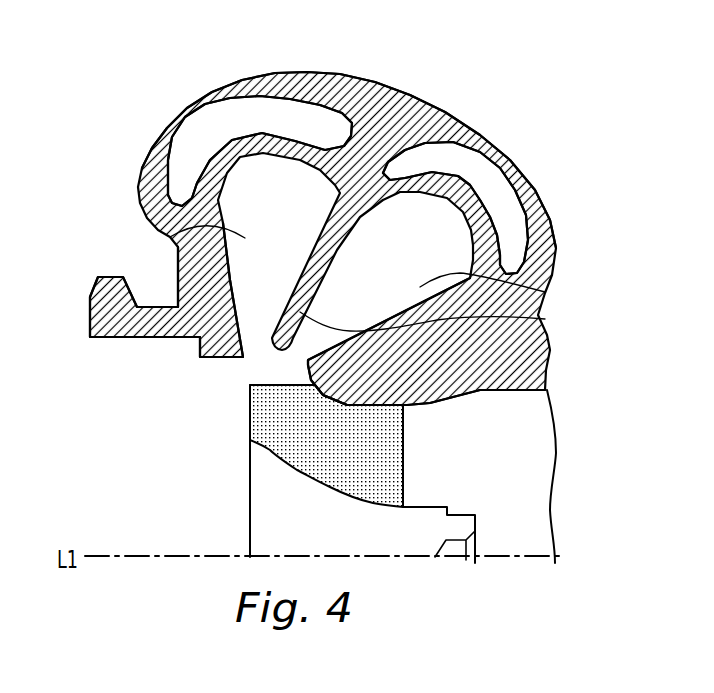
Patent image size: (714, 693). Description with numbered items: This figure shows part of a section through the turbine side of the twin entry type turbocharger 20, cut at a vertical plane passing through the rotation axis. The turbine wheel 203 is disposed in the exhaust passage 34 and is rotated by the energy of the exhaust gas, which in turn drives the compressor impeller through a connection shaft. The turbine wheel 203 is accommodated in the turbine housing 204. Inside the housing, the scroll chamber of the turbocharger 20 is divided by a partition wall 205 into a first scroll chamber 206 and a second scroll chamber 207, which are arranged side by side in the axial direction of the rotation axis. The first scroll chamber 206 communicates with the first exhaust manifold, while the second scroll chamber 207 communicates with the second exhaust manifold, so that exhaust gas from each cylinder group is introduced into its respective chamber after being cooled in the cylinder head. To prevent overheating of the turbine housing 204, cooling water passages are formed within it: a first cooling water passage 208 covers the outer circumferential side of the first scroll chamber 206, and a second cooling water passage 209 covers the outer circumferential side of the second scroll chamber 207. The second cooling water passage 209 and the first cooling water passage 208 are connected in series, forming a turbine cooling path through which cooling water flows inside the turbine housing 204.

The turbocharger 20 is at (129, 101).
The second cooling water passage 209 is at (253, 117).
The turbine housing 204 is at (400, 93).
The first cooling water passage 208 is at (482, 192).
The second scroll chamber 207 is at (170, 237).
The first scroll chamber 206 is at (540, 290).
The partition wall 205 is at (537, 317).
The turbine wheel 203 is at (387, 476).
The exhaust passage 34 is at (537, 482).